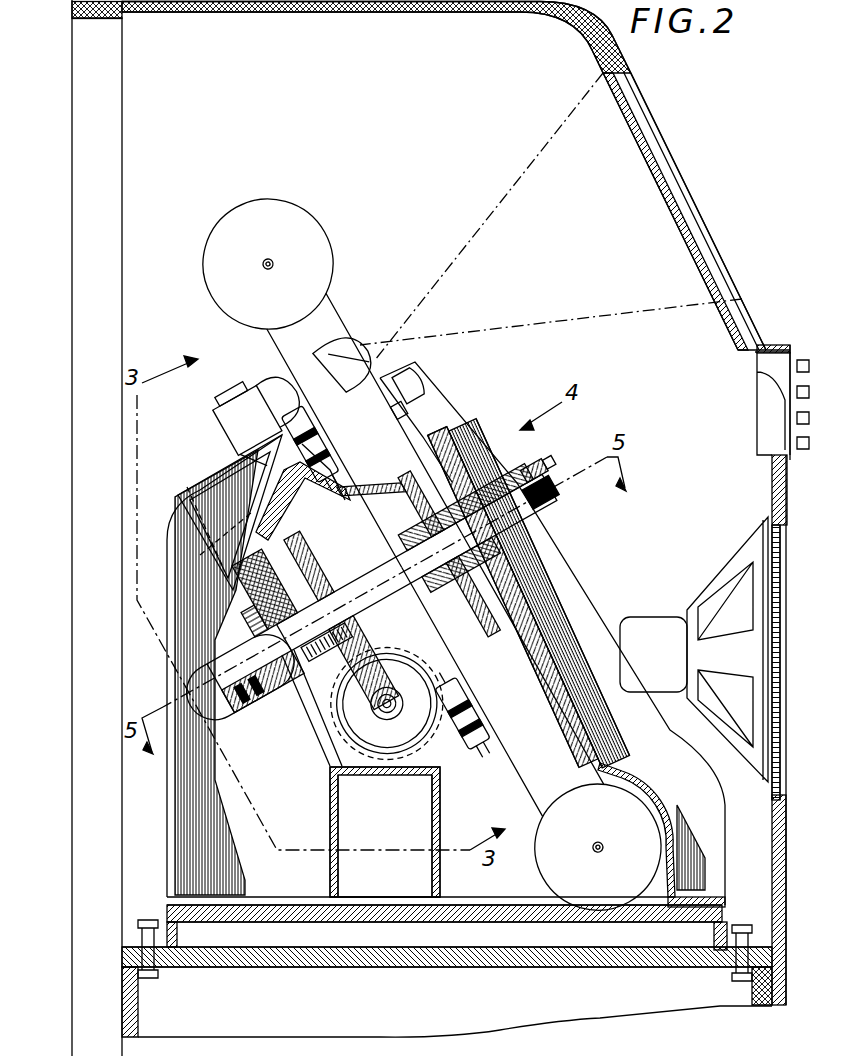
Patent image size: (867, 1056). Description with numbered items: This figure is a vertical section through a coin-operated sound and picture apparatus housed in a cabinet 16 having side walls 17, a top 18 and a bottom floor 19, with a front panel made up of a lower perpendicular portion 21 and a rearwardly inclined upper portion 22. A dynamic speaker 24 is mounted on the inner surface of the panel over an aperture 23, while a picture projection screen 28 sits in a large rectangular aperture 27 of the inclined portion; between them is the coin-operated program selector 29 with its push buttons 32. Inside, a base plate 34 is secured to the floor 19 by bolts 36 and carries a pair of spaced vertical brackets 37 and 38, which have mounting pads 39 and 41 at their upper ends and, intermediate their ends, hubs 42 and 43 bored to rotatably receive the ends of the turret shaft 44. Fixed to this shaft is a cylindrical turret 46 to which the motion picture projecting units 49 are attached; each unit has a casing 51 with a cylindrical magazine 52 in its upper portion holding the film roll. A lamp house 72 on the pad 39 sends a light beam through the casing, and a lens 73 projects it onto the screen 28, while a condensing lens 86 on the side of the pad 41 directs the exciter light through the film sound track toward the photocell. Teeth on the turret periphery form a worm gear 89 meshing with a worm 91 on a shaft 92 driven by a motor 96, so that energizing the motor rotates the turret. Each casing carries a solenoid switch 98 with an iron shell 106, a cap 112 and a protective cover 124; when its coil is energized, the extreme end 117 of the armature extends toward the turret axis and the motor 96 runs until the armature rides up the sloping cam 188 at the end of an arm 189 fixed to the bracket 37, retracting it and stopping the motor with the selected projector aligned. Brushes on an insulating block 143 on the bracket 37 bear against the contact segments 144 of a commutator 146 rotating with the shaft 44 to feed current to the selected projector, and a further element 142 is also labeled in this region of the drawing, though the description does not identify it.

The cabinet 16 is at (62, 195).
The side walls 17 is at (380, 126).
The top 18 is at (346, 2).
The bottom floor 19 is at (355, 967).
The lower perpendicular portion 21 is at (784, 902).
The rearwardly inclined upper portion 22 is at (737, 312).
The aperture 23 is at (776, 776).
The dynamic speaker 24 is at (720, 590).
The rectangular aperture 27 is at (683, 198).
The picture projection screen 28 is at (628, 148).
The coin-operated program selector 29 is at (808, 340).
The push buttons 32 is at (805, 450).
The base plate 34 is at (250, 913).
The bolts 36 is at (146, 920).
The bracket 37 is at (183, 790).
The bracket 38 is at (538, 568).
The mounting pad 39 is at (240, 455).
The mounting pad 41 is at (438, 432).
The hub 42 is at (240, 680).
The hub 43 is at (530, 522).
The turret shaft 44 is at (385, 588).
The cylindrical turret 46 is at (470, 650).
The motion picture projecting unit 49 is at (278, 357).
The casing 51 is at (330, 316).
The cylindrical magazine 52 is at (322, 236).
The lamp house 72 is at (228, 426).
The lens 73 is at (352, 352).
The condensing lens 86 is at (398, 412).
The worm gear 89 is at (285, 527).
The worm 91 is at (418, 742).
The shaft 92 is at (388, 778).
The motor 96 is at (345, 722).
The solenoid switch 98 is at (470, 718).
The iron shell 106 is at (322, 446).
The cap 112 is at (458, 692).
The extreme end of the armature 117 is at (442, 680).
The cover 124 is at (312, 422).
The spring block 142 is at (253, 595).
The insulating block 143 is at (205, 512).
The contact segments 144 is at (296, 690).
The commutator 146 is at (348, 652).
The cam 188 is at (340, 472).
The arm 189 is at (320, 505).